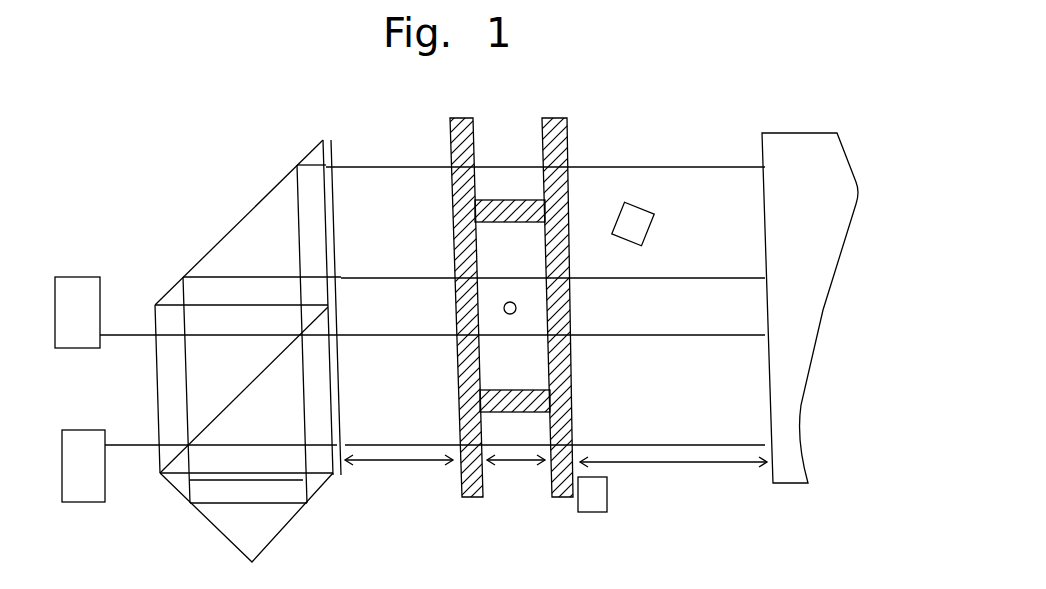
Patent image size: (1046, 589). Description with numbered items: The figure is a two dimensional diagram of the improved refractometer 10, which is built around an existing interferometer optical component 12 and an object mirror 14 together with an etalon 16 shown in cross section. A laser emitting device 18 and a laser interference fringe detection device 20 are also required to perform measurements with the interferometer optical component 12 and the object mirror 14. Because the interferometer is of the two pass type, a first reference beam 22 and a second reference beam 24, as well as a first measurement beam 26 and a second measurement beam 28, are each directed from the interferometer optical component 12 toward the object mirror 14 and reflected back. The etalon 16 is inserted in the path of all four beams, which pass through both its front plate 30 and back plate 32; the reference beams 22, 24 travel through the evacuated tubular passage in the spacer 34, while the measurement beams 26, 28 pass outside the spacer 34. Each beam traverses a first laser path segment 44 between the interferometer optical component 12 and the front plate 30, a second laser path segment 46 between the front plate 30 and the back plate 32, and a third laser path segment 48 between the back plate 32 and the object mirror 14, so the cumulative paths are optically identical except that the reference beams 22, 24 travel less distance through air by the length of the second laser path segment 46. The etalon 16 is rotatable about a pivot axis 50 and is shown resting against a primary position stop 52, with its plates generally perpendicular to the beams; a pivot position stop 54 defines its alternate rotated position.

The improved refractometer 10 is at (744, 116).
The interferometer optical component 12 is at (231, 227).
The object mirror 14 is at (810, 227).
The etalon 16 is at (568, 152).
The laser emitting device 18 is at (88, 325).
The laser interference fringe detection device 20 is at (96, 477).
The first reference beam 22 is at (410, 278).
The second reference beam 24 is at (446, 336).
The first measurement beam 26 is at (377, 166).
The second measurement beam 28 is at (401, 445).
The front plate 30 is at (461, 493).
The back plate 32 is at (568, 497).
The spacer 34 is at (505, 200).
The first laser path segment 44 is at (428, 466).
The second laser path segment 46 is at (523, 463).
The third laser path segment 48 is at (703, 466).
The pivot axis 50 is at (504, 308).
The primary position stop 52 is at (607, 492).
The pivot position stop 54 is at (654, 218).